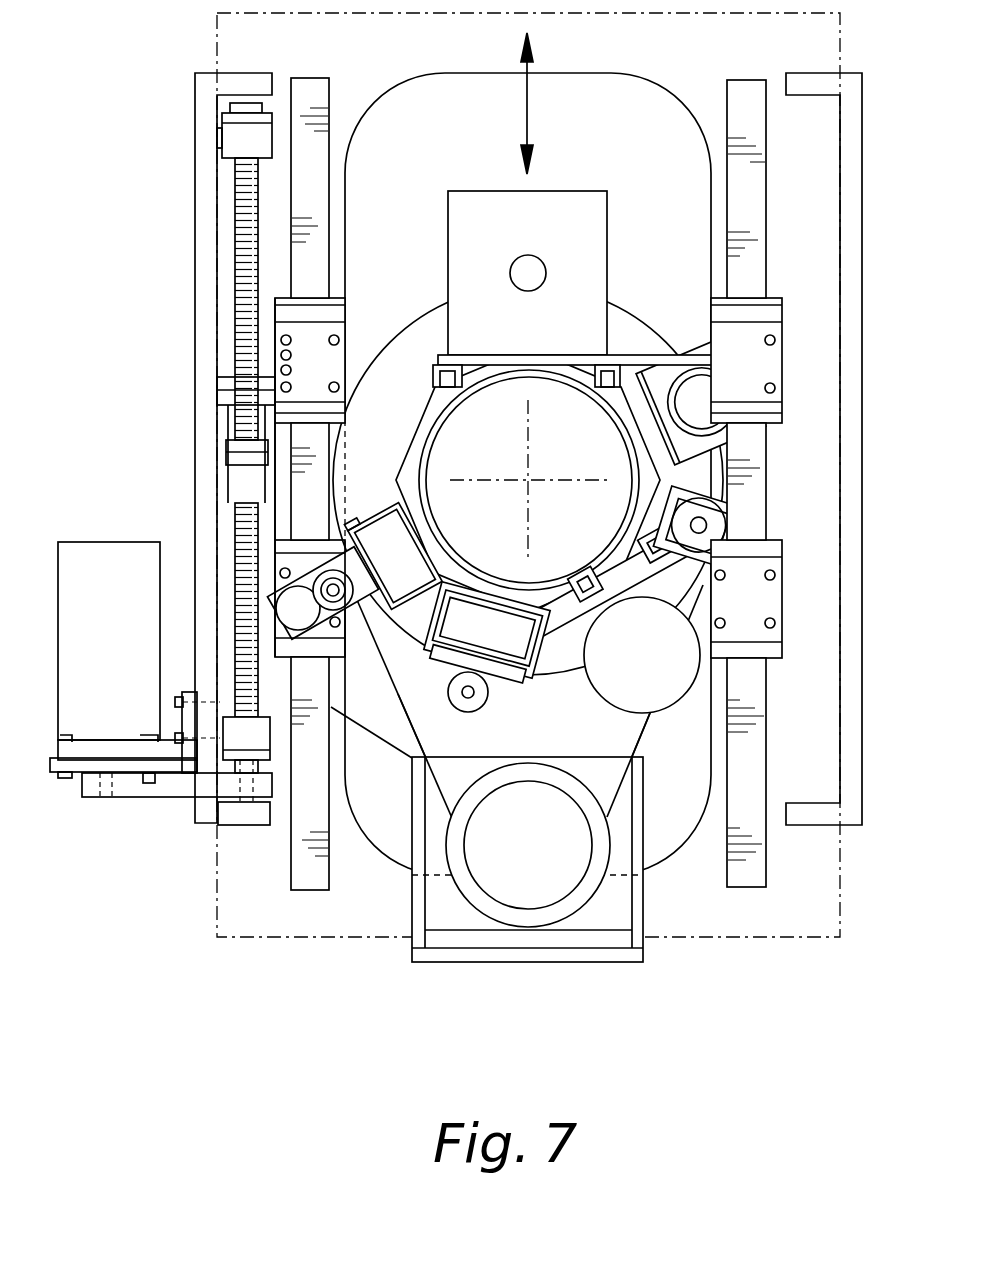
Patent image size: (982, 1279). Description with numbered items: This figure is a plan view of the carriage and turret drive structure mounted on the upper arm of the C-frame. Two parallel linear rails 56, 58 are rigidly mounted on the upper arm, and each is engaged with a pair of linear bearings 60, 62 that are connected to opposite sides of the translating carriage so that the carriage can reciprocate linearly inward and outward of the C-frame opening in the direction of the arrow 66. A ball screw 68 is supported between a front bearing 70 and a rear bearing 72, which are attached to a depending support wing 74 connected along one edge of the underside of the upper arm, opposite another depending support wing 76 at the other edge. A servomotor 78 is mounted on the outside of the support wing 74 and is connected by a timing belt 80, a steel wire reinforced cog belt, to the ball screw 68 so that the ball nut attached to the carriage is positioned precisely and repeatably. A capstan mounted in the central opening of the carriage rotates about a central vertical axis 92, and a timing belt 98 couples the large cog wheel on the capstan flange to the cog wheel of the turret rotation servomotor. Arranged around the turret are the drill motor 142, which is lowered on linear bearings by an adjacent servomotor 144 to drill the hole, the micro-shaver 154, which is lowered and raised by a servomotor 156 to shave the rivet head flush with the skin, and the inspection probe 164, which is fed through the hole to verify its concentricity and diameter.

The linear rail 56 is at (757, 200).
The linear rail 58 is at (320, 177).
The linear bearings 60 is at (766, 356).
The linear bearings 62 is at (333, 352).
The arrow 66 is at (535, 120).
The ball screw 68 is at (240, 535).
The front bearing 70 is at (232, 143).
The rear bearing 72 is at (331, 705).
The depending support wing 74 is at (204, 422).
The depending support wing 76 is at (852, 293).
The servomotor 78 is at (135, 657).
The timing belt 80 is at (180, 790).
The central vertical axis 92 is at (540, 478).
The timing belt 98 is at (645, 735).
The drill motor 142 is at (527, 273).
The servomotor 144 is at (712, 404).
The micro-shaver 154 is at (642, 655).
The servomotor 156 is at (705, 522).
The inspection probe 164 is at (469, 694).